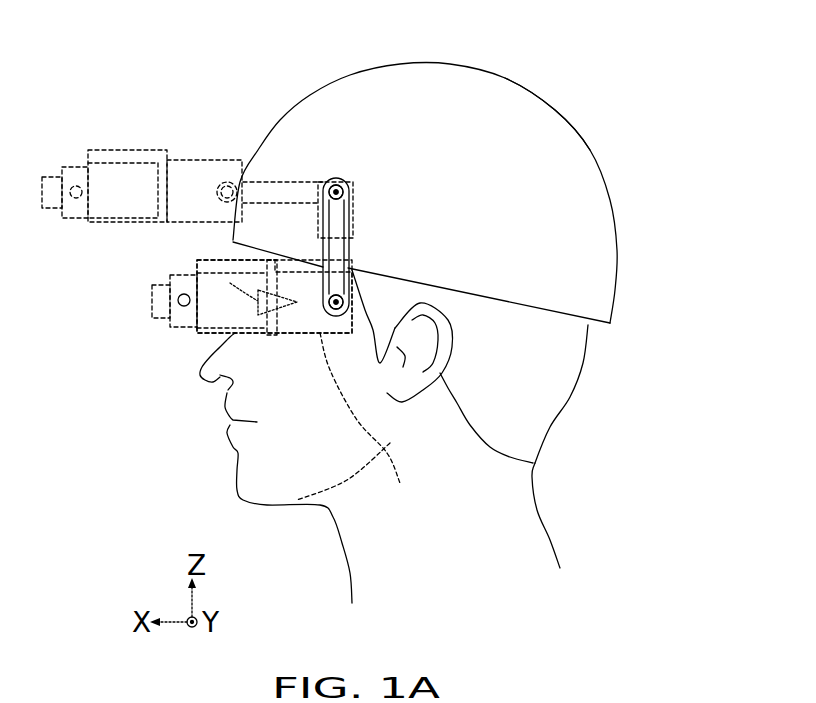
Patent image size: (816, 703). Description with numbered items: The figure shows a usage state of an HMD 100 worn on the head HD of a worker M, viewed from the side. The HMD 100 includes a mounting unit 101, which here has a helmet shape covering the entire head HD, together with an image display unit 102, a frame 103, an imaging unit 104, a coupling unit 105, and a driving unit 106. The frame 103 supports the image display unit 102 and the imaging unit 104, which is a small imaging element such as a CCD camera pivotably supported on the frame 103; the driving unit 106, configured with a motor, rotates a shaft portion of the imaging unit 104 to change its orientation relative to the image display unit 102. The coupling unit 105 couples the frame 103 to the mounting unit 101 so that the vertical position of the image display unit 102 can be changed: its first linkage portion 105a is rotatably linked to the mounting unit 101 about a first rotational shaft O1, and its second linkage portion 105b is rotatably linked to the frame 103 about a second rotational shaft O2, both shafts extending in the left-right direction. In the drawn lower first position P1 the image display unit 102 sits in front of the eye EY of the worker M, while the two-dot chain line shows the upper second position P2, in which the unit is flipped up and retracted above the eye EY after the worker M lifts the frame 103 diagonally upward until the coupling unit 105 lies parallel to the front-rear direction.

The HMD 100 is at (580, 104).
The mounting unit 101 is at (570, 162).
The image display unit 102 is at (215, 318).
The frame 103 is at (370, 426).
The imaging unit 104 is at (147, 308).
The coupling unit 105 is at (348, 250).
The first linkage portion 105a is at (352, 192).
The second linkage portion 105b is at (350, 308).
The driving unit 106 is at (180, 323).
The first position P1 is at (139, 299).
The second position P2 is at (112, 139).
The first rotational shaft O1 is at (337, 177).
The second rotational shaft O2 is at (345, 298).
The eye EY is at (238, 290).
The head HD is at (562, 352).
The worker M is at (548, 498).